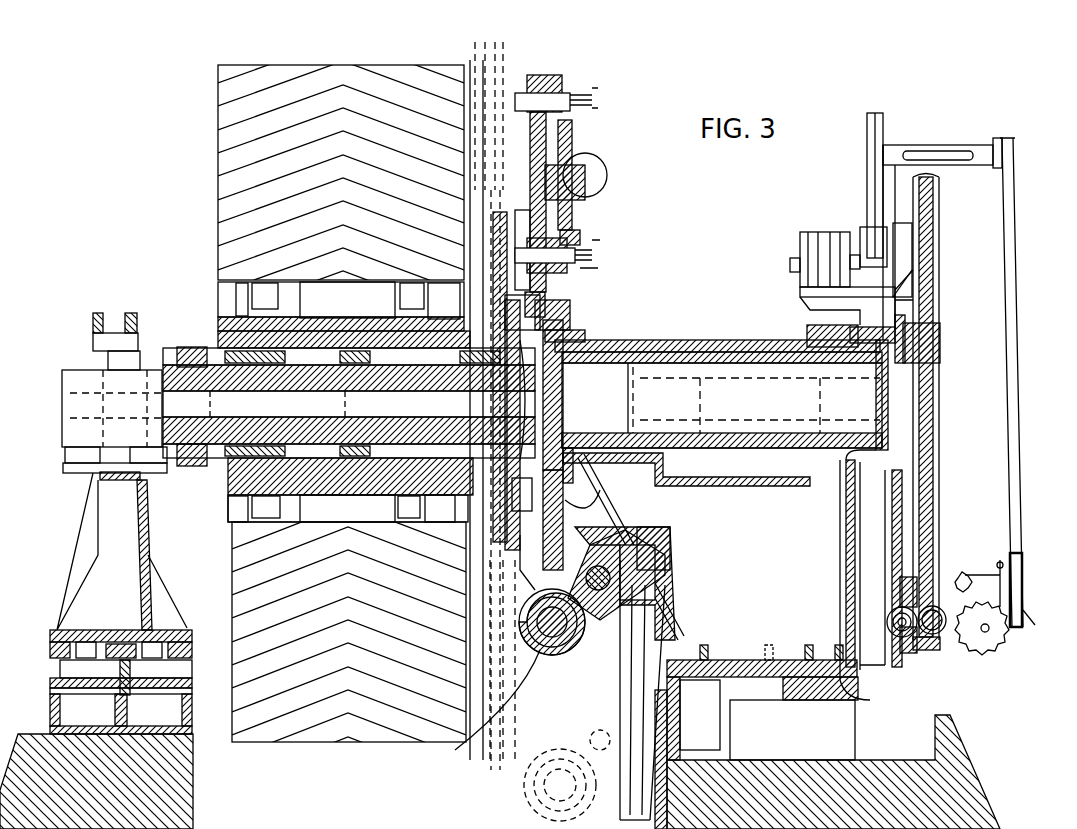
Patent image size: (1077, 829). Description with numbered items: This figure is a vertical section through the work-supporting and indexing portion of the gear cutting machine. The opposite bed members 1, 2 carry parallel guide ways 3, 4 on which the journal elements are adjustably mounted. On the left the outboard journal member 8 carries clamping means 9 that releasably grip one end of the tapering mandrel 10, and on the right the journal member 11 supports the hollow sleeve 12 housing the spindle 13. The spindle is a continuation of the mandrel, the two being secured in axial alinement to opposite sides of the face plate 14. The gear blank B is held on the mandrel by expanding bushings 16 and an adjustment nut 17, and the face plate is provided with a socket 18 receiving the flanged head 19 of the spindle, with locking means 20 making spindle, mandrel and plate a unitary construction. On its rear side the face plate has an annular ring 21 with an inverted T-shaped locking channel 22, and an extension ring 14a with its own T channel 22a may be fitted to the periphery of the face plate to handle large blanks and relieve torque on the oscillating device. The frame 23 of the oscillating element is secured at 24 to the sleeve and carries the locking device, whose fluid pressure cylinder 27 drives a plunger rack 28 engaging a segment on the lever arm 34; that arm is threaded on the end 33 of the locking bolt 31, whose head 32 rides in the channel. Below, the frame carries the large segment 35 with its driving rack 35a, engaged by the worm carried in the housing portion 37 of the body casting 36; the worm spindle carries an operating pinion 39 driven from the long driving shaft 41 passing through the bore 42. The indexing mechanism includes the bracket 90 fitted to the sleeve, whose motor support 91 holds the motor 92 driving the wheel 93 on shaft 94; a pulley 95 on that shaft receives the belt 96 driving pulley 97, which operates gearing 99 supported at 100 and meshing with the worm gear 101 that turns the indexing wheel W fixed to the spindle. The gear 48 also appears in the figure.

The bed member 1 is at (50, 653).
The bed member 2 is at (827, 744).
The guide way 3 is at (95, 640).
The guide way 4 is at (704, 665).
The outboard journal member 8 is at (150, 508).
The clamping means 9 is at (108, 355).
The mandrel 10 is at (349, 404).
The journal member 11 is at (650, 340).
The hollow sleeve 12 is at (735, 350).
The spindle 13 is at (725, 395).
The face plate 14 is at (493, 232).
The extension ring 14a is at (475, 48).
The expanding bushings 16 is at (290, 350).
The adjustment nut 17 is at (180, 360).
The socket 18 is at (522, 422).
The head or flanged portion 19 is at (562, 375).
The locking means 20 is at (480, 390).
The annular ring 21 is at (519, 249).
The locking channel 22 is at (548, 300).
The T channel 22a is at (510, 72).
The frame 23 is at (575, 318).
The securing point 24 is at (585, 336).
The fluid pressure cylinder 27 is at (575, 165).
The plunger rack 28 is at (585, 180).
The locking bolt 31 is at (585, 250).
The head 32 is at (495, 272).
The threaded end 33 is at (600, 268).
The lever arm 34 is at (605, 225).
The segment 35 is at (600, 532).
The driving rack 35a is at (520, 590).
The body casting 36 is at (660, 604).
The housing portion 37 is at (568, 650).
The operating pinion 39 is at (470, 740).
The driving shaft 41 is at (660, 552).
The bore 42 is at (612, 578).
The gear 48 is at (982, 628).
The bracket 90 is at (872, 660).
The motor support 91 is at (815, 300).
The motor 92 is at (800, 240).
The wheel 93 is at (867, 168).
The shaft 94 is at (940, 150).
The pulley 95 is at (990, 178).
The belt 96 is at (1010, 480).
The pulley 97 is at (1039, 625).
The gearing 99 is at (958, 576).
The support 100 is at (940, 640).
The worm gear 101 is at (908, 660).
The gear blank B is at (316, 165).
The indexing wheel W is at (933, 304).